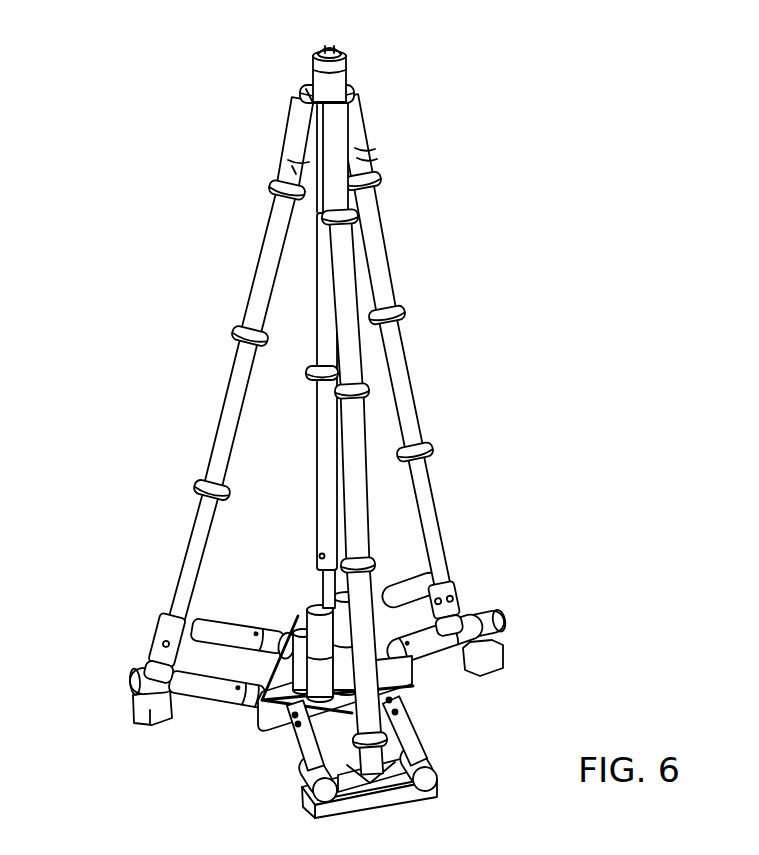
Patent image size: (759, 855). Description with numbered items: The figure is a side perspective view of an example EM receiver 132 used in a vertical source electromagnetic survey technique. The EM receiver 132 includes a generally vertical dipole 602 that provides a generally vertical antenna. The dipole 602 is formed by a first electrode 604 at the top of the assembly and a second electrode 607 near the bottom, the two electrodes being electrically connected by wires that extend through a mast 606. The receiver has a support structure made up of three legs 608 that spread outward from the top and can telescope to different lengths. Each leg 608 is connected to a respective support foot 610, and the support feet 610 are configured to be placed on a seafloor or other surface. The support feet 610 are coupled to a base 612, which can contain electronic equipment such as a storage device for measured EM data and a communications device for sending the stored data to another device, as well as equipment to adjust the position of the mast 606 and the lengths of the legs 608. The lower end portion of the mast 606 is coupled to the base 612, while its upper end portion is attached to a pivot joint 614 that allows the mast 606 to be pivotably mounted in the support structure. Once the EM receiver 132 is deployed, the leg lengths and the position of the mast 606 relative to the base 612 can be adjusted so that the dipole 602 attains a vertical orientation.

The EM receiver 132 is at (645, 252).
The generally vertical dipole 602 is at (305, 524).
The first electrode 604 is at (310, 83).
The mast 606 is at (331, 447).
The second electrode 607 is at (303, 771).
The legs 608 is at (258, 306).
The support foot 610 is at (150, 728).
The base 612 is at (270, 738).
The pivot joint 614 is at (352, 92).